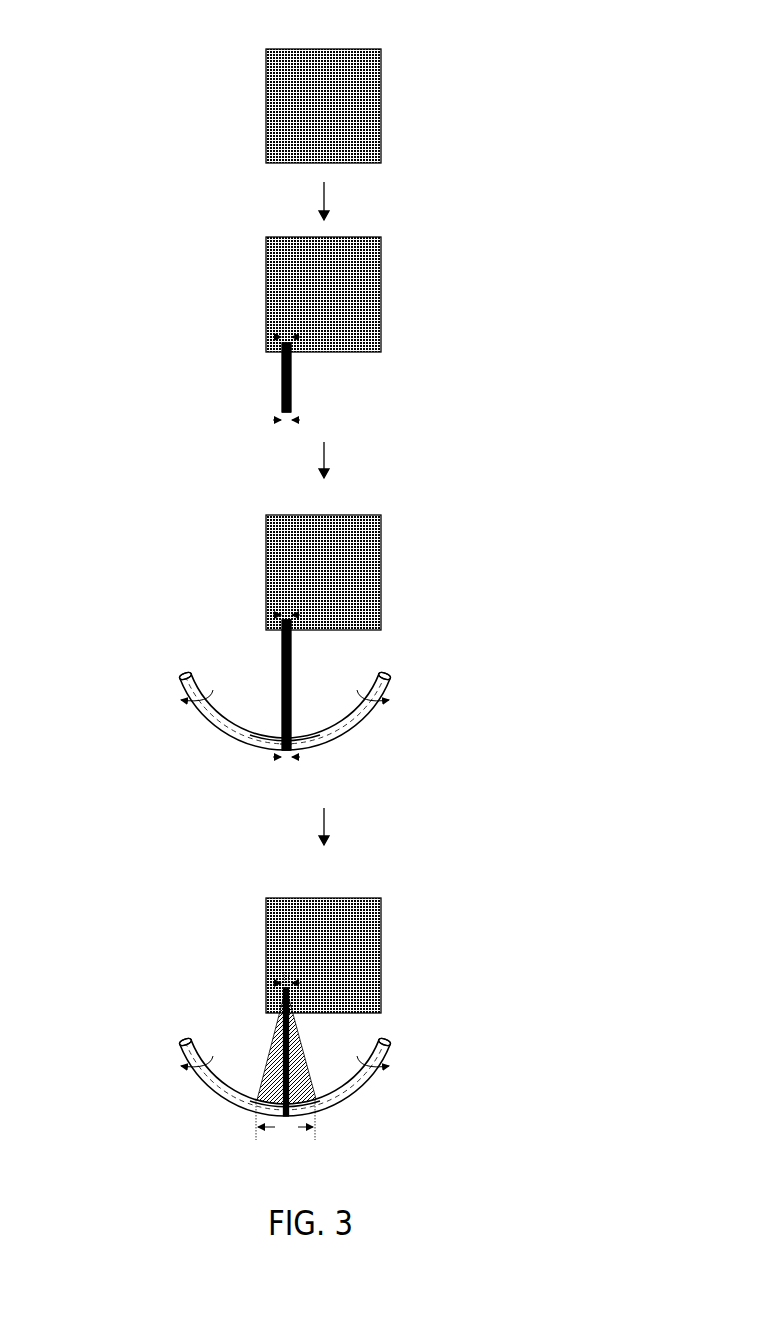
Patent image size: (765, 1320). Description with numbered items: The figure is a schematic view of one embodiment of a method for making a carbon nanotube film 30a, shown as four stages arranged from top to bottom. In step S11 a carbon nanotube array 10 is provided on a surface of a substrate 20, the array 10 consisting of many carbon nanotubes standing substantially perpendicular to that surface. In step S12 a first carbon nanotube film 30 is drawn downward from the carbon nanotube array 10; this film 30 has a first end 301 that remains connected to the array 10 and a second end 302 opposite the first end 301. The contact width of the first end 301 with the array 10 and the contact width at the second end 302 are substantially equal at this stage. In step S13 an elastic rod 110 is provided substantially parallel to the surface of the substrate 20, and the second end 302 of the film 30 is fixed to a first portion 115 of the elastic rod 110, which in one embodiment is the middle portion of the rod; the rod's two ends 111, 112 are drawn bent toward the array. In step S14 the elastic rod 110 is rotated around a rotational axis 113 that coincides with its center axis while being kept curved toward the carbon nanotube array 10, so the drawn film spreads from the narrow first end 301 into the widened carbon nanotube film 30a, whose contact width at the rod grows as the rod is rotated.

The carbon nanotube array 10 is at (347, 90).
The substrate 20 is at (381, 128).
The first carbon nanotube film 30 is at (291, 378).
The carbon nanotube film 30a is at (297, 1068).
The first end 301 is at (281, 344).
The second end 302 is at (281, 412).
The elastic rod 110 is at (370, 718).
The first end of flexible member 111 is at (178, 676).
The second end of flexible member 112 is at (392, 676).
The rotational axis 113 is at (335, 735).
The first portion 115 is at (285, 740).
The step S11 is at (470, 19).
The step S12 is at (469, 229).
The step S13 is at (469, 488).
The step S14 is at (469, 841).